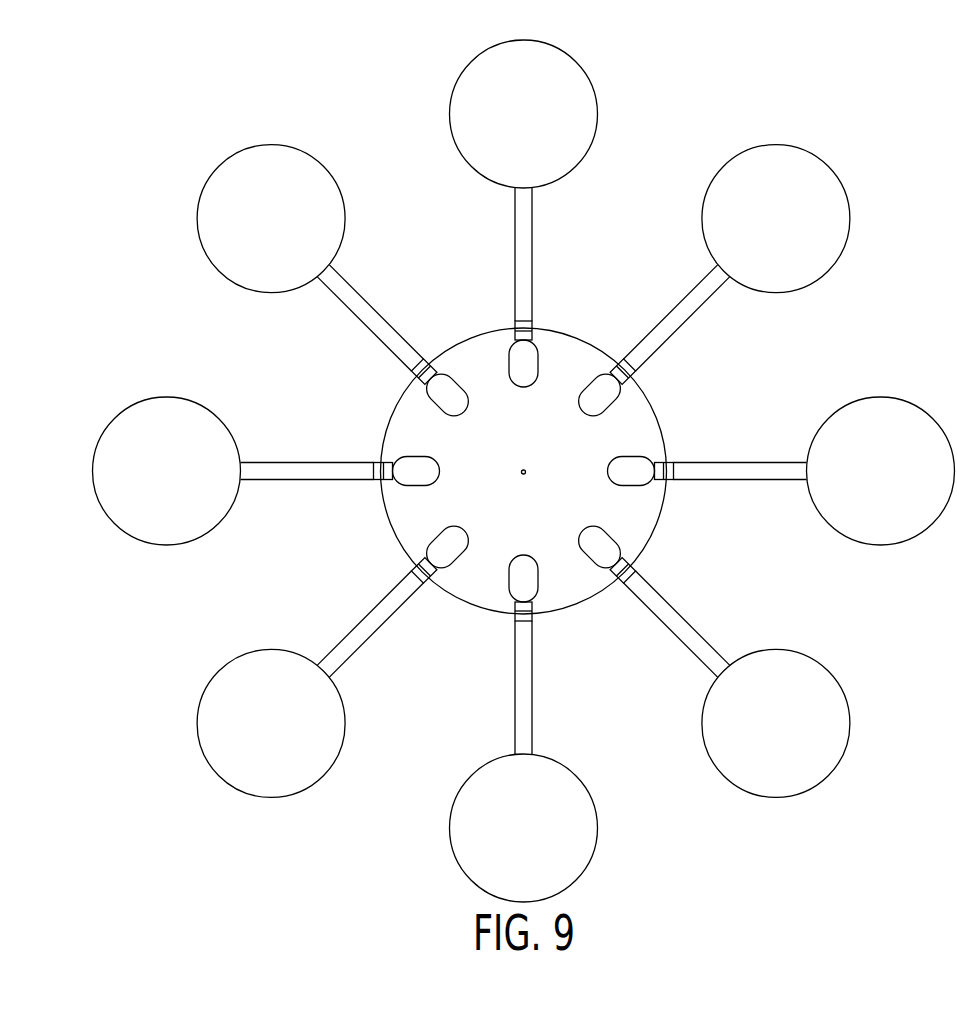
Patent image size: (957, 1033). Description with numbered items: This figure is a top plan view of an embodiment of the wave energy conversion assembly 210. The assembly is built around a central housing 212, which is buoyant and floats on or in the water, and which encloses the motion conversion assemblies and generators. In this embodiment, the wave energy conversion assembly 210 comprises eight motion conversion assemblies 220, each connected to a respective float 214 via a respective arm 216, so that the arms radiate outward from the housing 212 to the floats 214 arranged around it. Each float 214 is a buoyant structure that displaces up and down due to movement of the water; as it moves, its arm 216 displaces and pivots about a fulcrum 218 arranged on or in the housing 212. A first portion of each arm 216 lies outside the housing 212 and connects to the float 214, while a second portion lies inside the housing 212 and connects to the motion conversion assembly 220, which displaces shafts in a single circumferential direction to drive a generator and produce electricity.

The wave energy conversion assembly 210 is at (96, 103).
The housing 212 is at (640, 392).
The float 214 is at (866, 478).
The arm 216 is at (524, 471).
The fulcrum 218 is at (525, 470).
The motion conversion assembly 220 is at (533, 475).